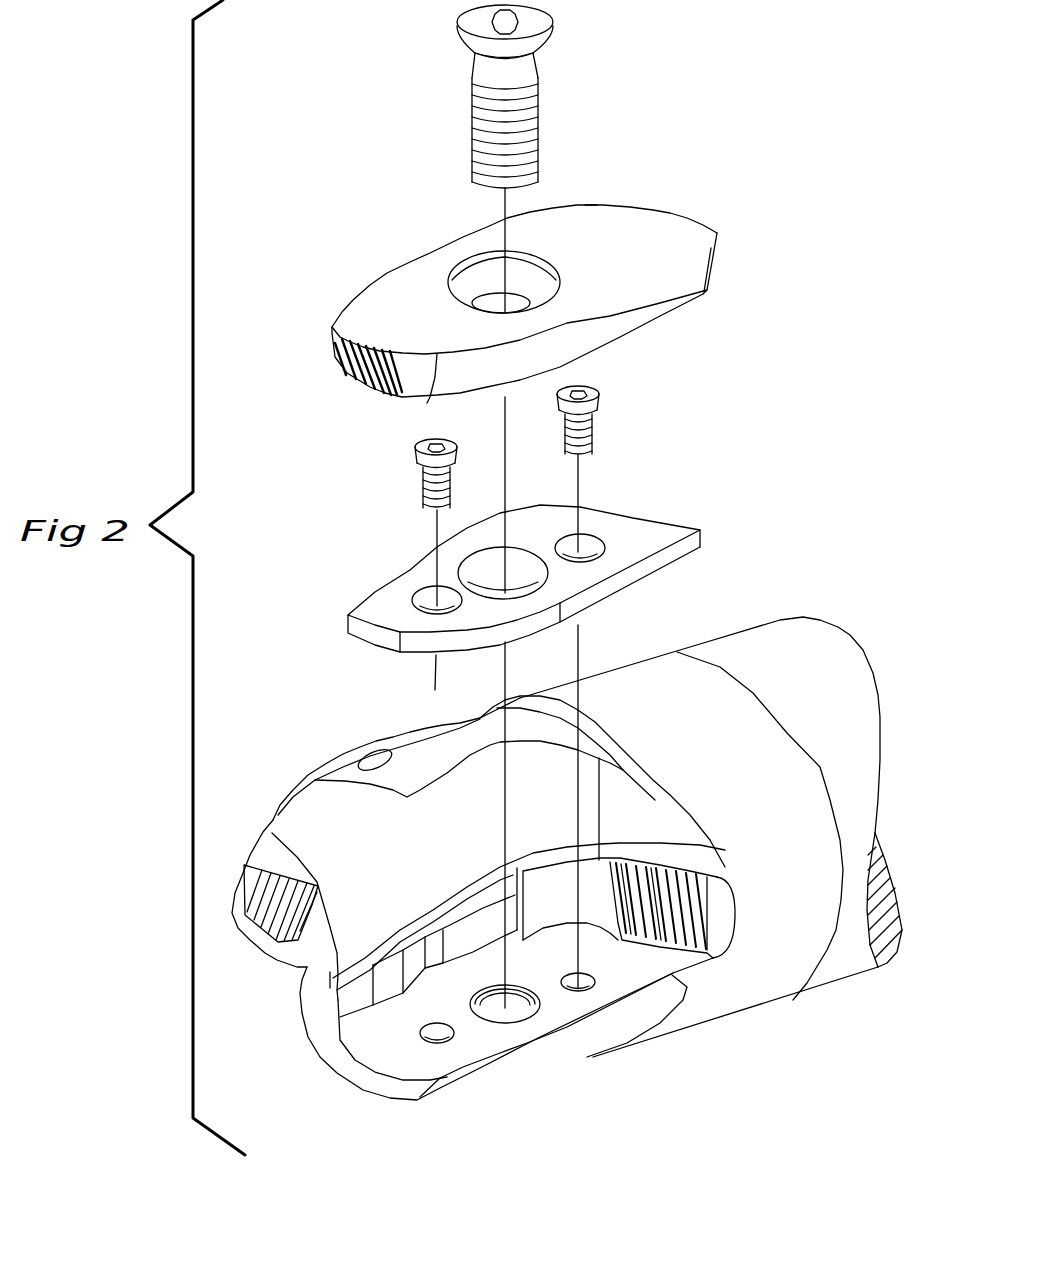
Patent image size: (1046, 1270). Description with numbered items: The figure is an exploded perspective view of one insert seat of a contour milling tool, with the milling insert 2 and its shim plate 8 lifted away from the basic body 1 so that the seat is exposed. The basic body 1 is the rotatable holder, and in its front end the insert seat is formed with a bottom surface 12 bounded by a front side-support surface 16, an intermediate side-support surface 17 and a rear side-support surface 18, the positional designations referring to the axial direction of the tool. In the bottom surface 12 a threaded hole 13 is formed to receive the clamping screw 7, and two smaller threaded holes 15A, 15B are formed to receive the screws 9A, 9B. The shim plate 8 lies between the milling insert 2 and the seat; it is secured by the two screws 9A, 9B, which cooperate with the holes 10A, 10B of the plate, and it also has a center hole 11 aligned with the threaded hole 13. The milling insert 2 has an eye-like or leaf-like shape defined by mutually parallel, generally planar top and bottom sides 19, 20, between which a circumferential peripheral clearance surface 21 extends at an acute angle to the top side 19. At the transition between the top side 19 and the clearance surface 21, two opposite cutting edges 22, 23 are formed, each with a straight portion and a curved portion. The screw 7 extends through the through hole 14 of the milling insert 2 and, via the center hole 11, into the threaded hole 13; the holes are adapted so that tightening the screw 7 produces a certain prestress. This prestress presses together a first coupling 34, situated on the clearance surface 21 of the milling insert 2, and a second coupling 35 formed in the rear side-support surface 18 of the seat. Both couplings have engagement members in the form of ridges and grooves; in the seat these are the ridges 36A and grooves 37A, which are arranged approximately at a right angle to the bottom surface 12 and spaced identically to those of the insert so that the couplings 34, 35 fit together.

The basic body 1 is at (567, 879).
The milling insert 2 is at (543, 268).
The screw 7 is at (562, 97).
The shim plate 8 is at (537, 545).
The screw 9A is at (405, 488).
The screw 9B is at (615, 425).
The hole 10A is at (428, 593).
The hole 10B is at (583, 540).
The center hole 11 is at (497, 557).
The bottom surface 12 is at (553, 974).
The threaded hole 13 is at (522, 1013).
The through hole 14 is at (478, 268).
The threaded hole 15A is at (423, 1033).
The threaded hole 15B is at (590, 980).
The front side-support surface 16 is at (360, 983).
The intermediate side-support surface 17 is at (430, 927).
The rear side-support surface 18 is at (713, 868).
The top side 19 is at (629, 263).
The bottom side 20 is at (632, 333).
The clearance surface 21 is at (735, 263).
The cutting edge 22 is at (431, 400).
The cutting edge 23 is at (596, 204).
The first coupling 34 is at (342, 403).
The second coupling 35 is at (730, 910).
The ridges 36A is at (613, 860).
The grooves 37A is at (660, 867).